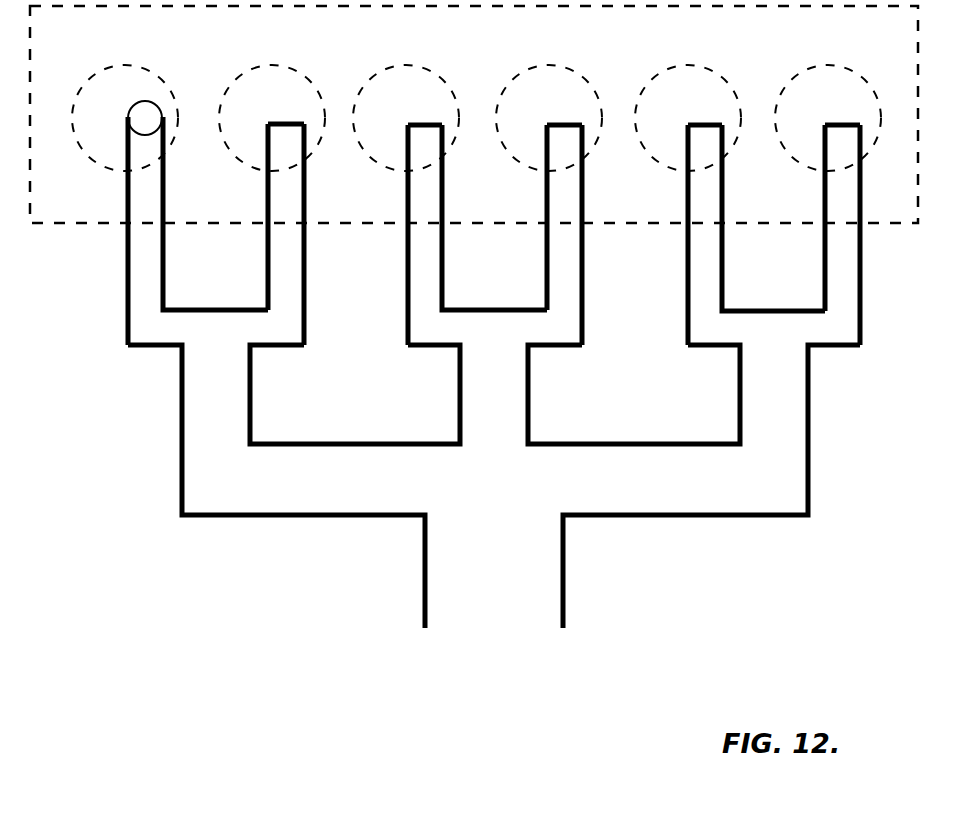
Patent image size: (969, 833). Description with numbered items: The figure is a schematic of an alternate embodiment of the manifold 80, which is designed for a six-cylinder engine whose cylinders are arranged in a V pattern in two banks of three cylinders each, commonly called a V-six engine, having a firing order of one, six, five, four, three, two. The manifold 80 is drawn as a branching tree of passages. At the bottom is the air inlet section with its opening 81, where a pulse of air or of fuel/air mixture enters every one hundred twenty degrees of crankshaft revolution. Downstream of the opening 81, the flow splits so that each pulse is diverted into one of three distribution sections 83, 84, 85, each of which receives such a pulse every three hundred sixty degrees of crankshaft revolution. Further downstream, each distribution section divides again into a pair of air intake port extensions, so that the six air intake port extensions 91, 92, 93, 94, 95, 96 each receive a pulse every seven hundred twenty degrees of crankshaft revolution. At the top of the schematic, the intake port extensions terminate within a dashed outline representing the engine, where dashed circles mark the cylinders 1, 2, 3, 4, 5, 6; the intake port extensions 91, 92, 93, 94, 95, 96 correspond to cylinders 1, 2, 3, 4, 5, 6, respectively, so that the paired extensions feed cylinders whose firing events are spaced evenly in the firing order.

The cylinder 1 is at (125, 118).
The cylinder 2 is at (688, 118).
The cylinder 3 is at (406, 118).
The cylinder 4 is at (272, 118).
The cylinder 5 is at (828, 118).
The cylinder 6 is at (549, 118).
The manifold 80 is at (472, 393).
The opening 81 is at (470, 637).
The distribution section 83 is at (192, 427).
The distribution section 84 is at (470, 422).
The distribution section 85 is at (748, 428).
The air intake port extension 91 is at (140, 282).
The air intake port extension 92 is at (697, 283).
The air intake port extension 93 is at (415, 286).
The air intake port extension 94 is at (278, 282).
The air intake port extension 95 is at (836, 282).
The air intake port extension 96 is at (548, 283).